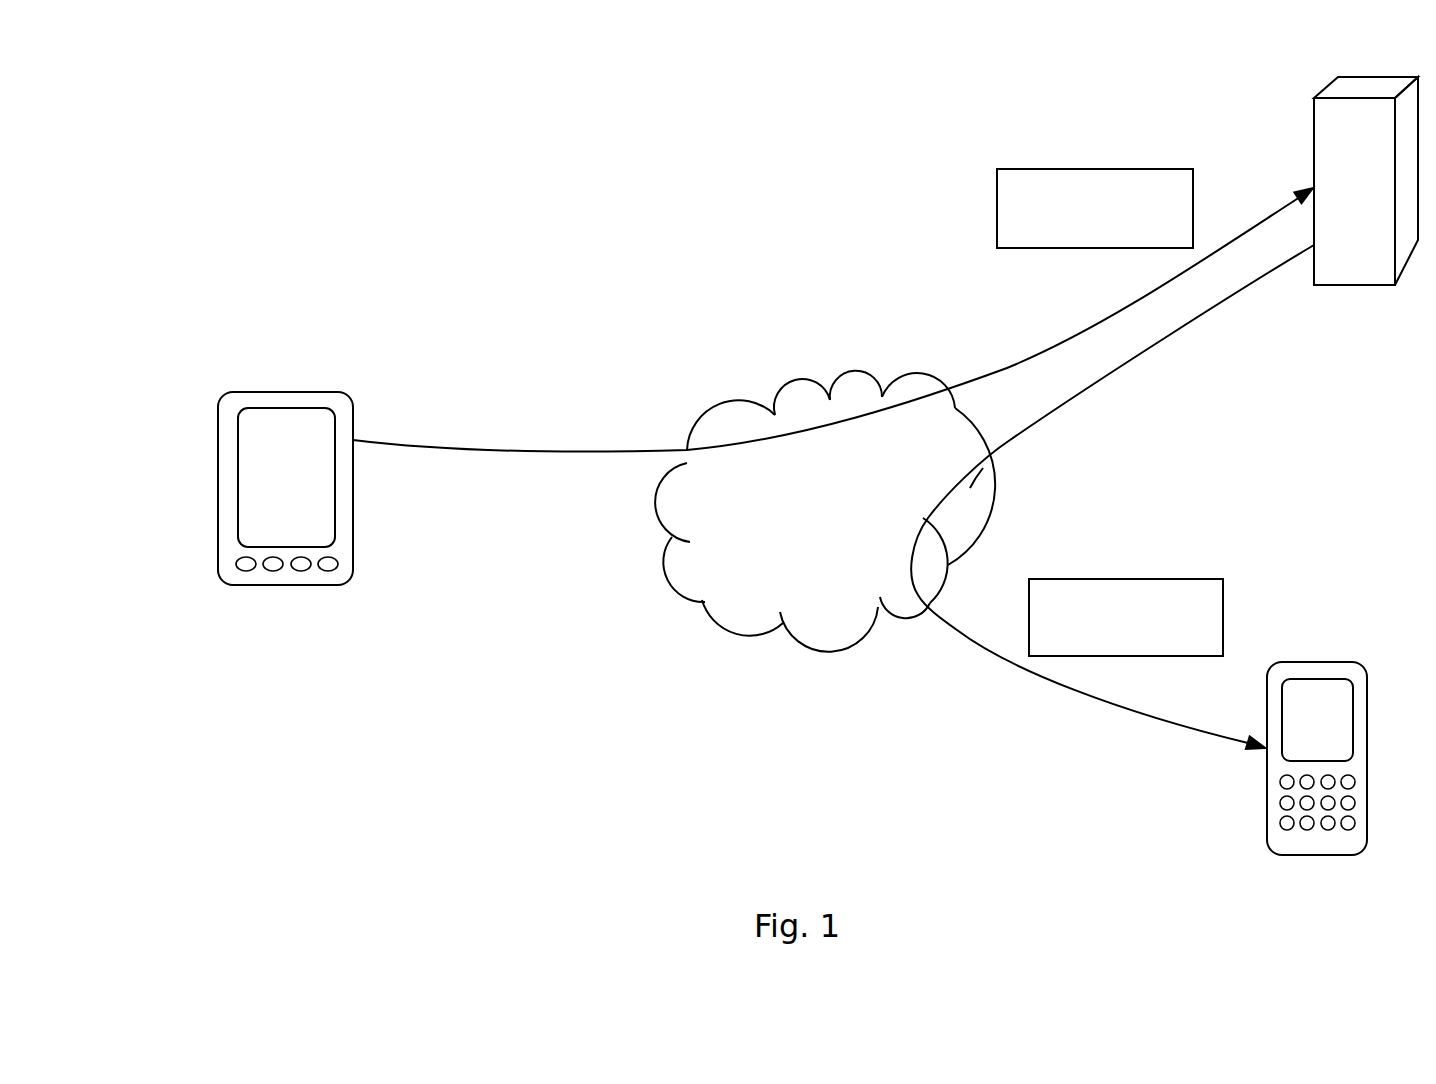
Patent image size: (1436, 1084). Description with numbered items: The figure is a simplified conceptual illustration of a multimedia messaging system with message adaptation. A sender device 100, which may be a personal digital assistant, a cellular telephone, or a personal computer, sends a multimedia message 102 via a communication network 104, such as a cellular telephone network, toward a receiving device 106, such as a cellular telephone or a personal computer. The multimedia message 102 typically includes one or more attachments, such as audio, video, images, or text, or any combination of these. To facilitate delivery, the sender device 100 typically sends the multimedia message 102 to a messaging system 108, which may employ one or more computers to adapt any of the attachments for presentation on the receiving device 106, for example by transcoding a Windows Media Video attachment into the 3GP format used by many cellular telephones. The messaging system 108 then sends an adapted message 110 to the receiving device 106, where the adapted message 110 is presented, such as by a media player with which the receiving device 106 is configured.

The sender device 100 is at (228, 392).
The multimedia message 102 is at (1005, 178).
The communication network 104 is at (728, 407).
The receiving device 106 is at (1352, 668).
The messaging system 108 is at (1315, 148).
The adapted message 110 is at (1200, 592).